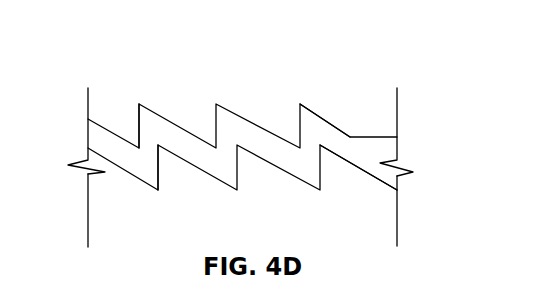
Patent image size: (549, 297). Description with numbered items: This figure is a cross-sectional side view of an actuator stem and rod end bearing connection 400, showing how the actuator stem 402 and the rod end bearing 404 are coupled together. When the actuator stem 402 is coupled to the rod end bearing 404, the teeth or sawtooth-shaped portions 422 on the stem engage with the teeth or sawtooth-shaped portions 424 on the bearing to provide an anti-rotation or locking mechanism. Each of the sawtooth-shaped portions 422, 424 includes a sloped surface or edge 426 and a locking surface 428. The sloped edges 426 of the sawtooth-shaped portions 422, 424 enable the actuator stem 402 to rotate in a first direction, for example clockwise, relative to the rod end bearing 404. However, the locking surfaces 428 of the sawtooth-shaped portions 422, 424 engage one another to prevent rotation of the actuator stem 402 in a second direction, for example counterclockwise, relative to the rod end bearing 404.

The actuator stem and rod end bearing connection 400 is at (110, 51).
The actuator stem 402 is at (281, 119).
The rod end bearing 404 is at (291, 196).
The sawtooth-shaped portions 422 is at (230, 107).
The sawtooth-shaped portions 424 is at (301, 181).
The sloped surface 426 is at (310, 110).
The locking surface 428 is at (139, 125).